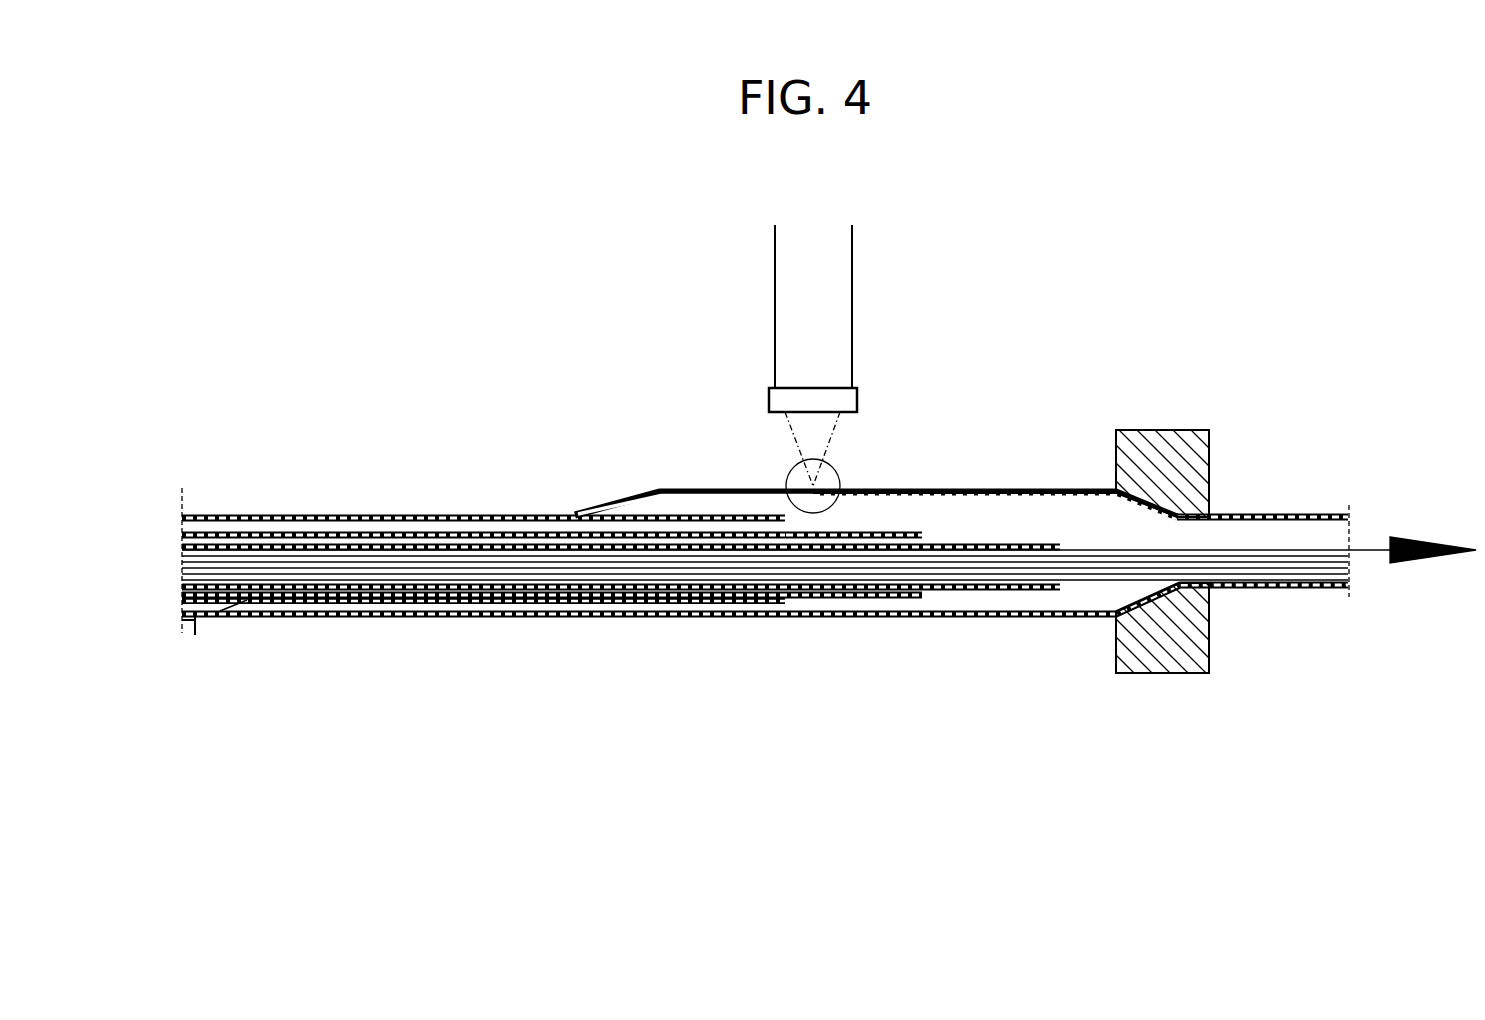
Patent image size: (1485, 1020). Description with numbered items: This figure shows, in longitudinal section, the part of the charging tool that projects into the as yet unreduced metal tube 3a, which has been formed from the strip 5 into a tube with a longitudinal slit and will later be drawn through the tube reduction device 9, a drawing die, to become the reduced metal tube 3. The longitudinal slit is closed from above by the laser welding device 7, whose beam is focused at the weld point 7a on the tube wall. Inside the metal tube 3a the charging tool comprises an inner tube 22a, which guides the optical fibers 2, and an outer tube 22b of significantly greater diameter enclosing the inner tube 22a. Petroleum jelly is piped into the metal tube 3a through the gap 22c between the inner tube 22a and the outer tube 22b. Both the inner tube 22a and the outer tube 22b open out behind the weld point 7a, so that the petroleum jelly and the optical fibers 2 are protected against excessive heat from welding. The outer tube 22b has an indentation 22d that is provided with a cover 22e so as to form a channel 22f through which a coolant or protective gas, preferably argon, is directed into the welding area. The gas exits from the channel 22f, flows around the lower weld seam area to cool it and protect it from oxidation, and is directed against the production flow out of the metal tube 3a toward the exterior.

The optical fibers 2 is at (1272, 562).
The metal tube 3 is at (1316, 513).
The unreduced metal tube 3a is at (1003, 490).
The strip 5 is at (214, 581).
The laser welding device 7 is at (835, 332).
The weld point 7a is at (808, 489).
The tube reduction device 9 is at (1185, 655).
The inner tube 22a is at (990, 596).
The outer tube 22b is at (848, 592).
The gap 22c is at (893, 540).
The indentation 22d is at (446, 540).
The cover 22e is at (285, 518).
The channel 22f is at (382, 530).